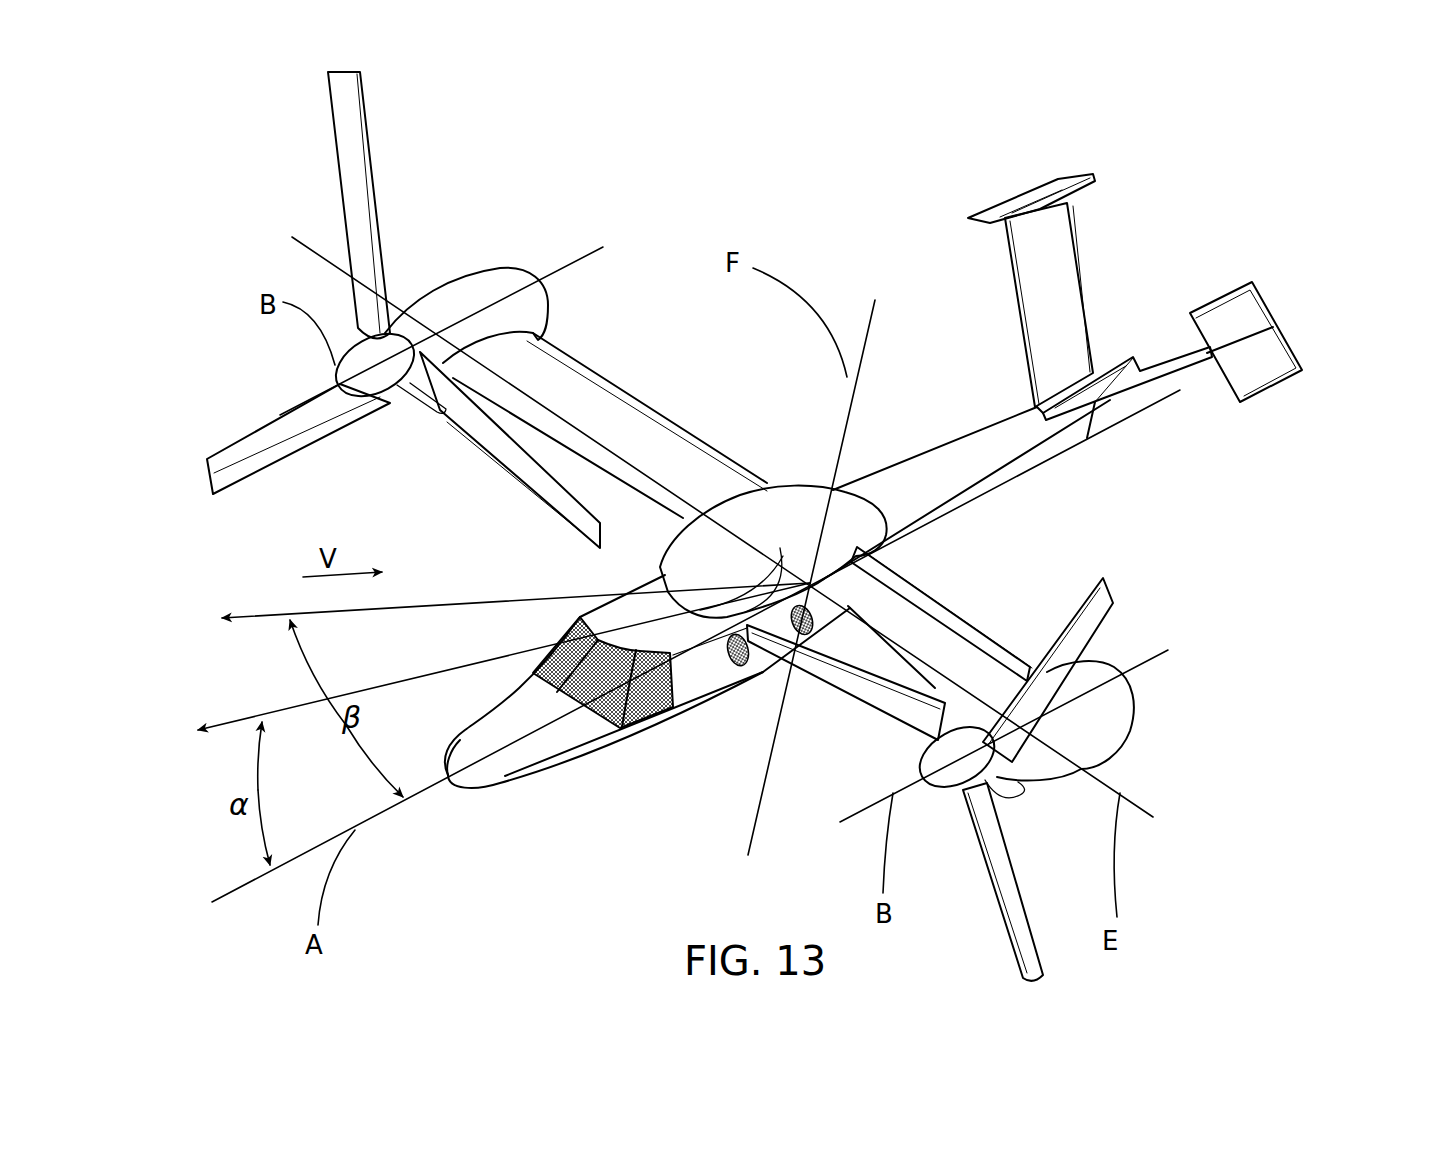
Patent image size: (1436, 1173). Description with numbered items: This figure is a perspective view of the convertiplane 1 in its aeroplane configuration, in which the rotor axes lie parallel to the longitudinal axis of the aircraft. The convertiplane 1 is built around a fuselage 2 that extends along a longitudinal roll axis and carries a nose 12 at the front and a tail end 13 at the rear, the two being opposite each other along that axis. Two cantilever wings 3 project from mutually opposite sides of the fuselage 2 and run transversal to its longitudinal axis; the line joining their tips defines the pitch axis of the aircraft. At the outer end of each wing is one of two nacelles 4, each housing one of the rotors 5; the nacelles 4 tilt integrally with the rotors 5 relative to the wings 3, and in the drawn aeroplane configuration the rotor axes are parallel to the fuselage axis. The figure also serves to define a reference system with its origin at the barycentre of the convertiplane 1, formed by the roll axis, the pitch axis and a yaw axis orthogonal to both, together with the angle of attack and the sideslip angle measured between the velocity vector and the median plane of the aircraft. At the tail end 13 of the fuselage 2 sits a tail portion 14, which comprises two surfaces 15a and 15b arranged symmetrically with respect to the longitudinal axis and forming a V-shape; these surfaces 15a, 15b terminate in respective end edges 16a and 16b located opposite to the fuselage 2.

The convertiplane 1 is at (708, 320).
The fuselage 2 is at (953, 523).
The cantilever wings 3 is at (580, 405).
The nacelles 4 is at (514, 282).
The rotors 5 is at (383, 207).
The nose 12 is at (510, 767).
The tail end 13 is at (1065, 423).
The tail portion 14 is at (1160, 285).
The surface 15a is at (1053, 296).
The surface 15b is at (1193, 370).
The end edge 16a is at (1040, 172).
The end edge 16b is at (1285, 315).